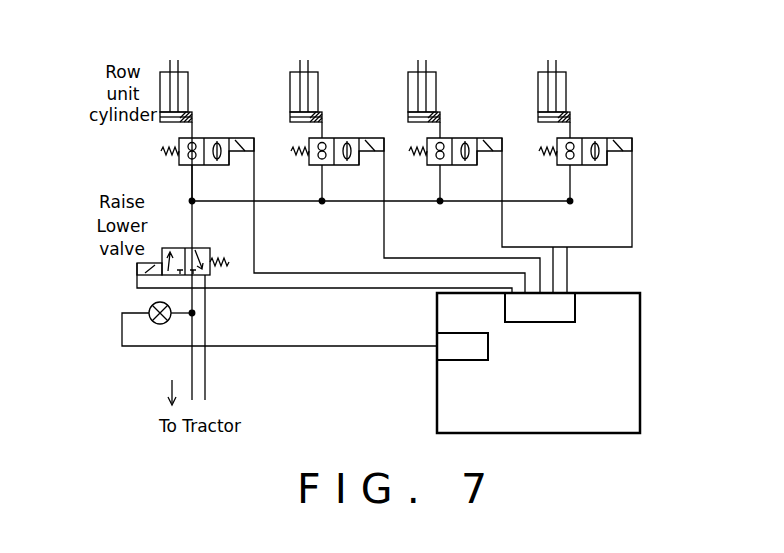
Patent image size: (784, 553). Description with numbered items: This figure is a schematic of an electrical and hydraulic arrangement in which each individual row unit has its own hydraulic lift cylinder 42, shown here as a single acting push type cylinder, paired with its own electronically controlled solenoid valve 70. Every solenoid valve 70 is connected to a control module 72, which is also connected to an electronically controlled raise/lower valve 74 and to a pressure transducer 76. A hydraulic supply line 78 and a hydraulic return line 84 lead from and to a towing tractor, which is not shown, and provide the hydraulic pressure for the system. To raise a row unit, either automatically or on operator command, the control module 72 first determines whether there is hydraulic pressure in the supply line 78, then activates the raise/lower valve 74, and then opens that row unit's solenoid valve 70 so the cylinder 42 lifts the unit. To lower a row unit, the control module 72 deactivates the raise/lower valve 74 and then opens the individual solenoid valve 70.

The hydraulic lift cylinder 42 is at (192, 82).
The electronically controlled solenoid valve 70 is at (207, 138).
The control module 72 is at (642, 360).
The raise/lower valve 74 is at (176, 248).
The pressure transducer 76 is at (140, 306).
The hydraulic supply line 78 is at (192, 357).
The hydraulic return line 84 is at (205, 365).